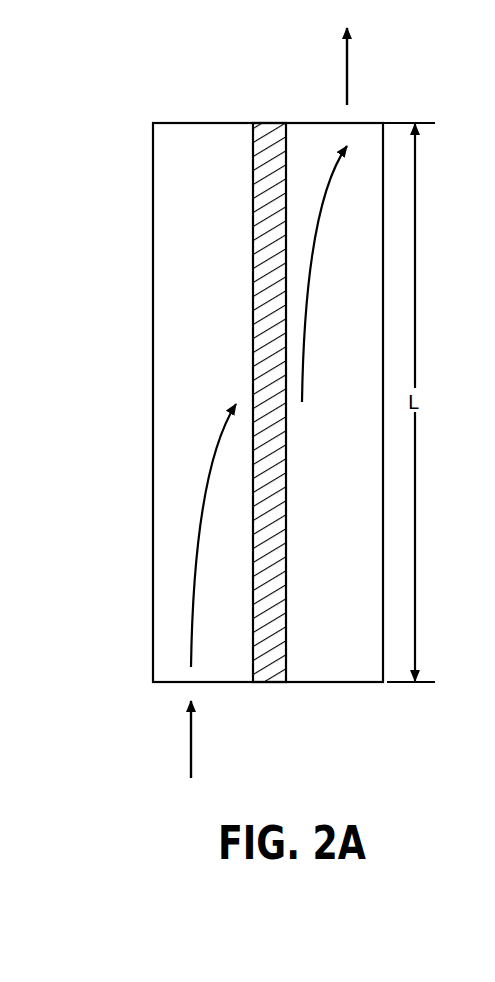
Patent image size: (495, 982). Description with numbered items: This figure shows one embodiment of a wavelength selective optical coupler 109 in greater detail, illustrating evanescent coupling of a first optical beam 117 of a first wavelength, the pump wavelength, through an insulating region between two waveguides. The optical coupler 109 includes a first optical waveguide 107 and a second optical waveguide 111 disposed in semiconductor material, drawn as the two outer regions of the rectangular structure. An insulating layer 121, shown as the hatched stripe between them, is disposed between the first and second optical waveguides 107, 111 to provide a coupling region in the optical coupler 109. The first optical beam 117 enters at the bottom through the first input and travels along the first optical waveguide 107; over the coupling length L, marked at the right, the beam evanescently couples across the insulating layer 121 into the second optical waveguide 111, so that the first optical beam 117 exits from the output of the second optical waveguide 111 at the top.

The optical coupler 109 is at (144, 51).
The first optical waveguide 107 is at (176, 376).
The second optical waveguide 111 is at (370, 357).
The insulating layer 121 is at (271, 684).
The first optical beam 117 is at (351, 70).